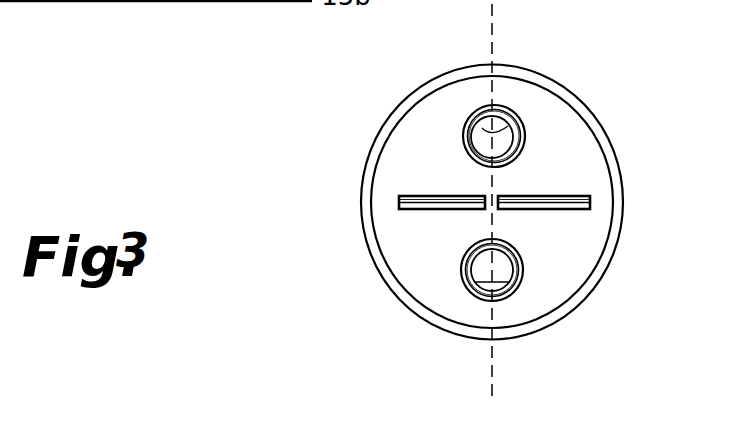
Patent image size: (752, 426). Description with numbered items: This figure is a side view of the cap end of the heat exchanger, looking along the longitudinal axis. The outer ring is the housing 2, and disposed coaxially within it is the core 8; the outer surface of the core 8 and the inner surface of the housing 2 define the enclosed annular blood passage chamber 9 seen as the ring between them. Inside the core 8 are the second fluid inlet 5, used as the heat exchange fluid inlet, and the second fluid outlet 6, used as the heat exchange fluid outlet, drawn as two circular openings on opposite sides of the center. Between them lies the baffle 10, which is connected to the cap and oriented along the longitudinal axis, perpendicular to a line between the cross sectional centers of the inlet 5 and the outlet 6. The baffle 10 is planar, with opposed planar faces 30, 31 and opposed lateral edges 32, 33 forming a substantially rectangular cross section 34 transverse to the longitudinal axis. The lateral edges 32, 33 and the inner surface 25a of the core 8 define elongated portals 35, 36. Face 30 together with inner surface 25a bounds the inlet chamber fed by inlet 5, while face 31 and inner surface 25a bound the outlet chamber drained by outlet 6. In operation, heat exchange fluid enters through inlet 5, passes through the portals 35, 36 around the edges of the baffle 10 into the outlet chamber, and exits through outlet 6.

The housing 2 is at (476, 202).
The second fluid inlet 5 is at (511, 98).
The second fluid outlet 6 is at (440, 299).
The core 8 is at (492, 168).
The annular blood passage chamber 9 is at (395, 70).
The baffle 10 is at (592, 137).
The inner surface 25a is at (531, 317).
The planar face 30 is at (392, 174).
The planar face 31 is at (352, 240).
The lateral edge 32 is at (592, 204).
The lateral edge 33 is at (394, 202).
The rectangular cross section 34 is at (586, 162).
The elongated portal 35 is at (602, 210).
The elongated portal 36 is at (383, 204).